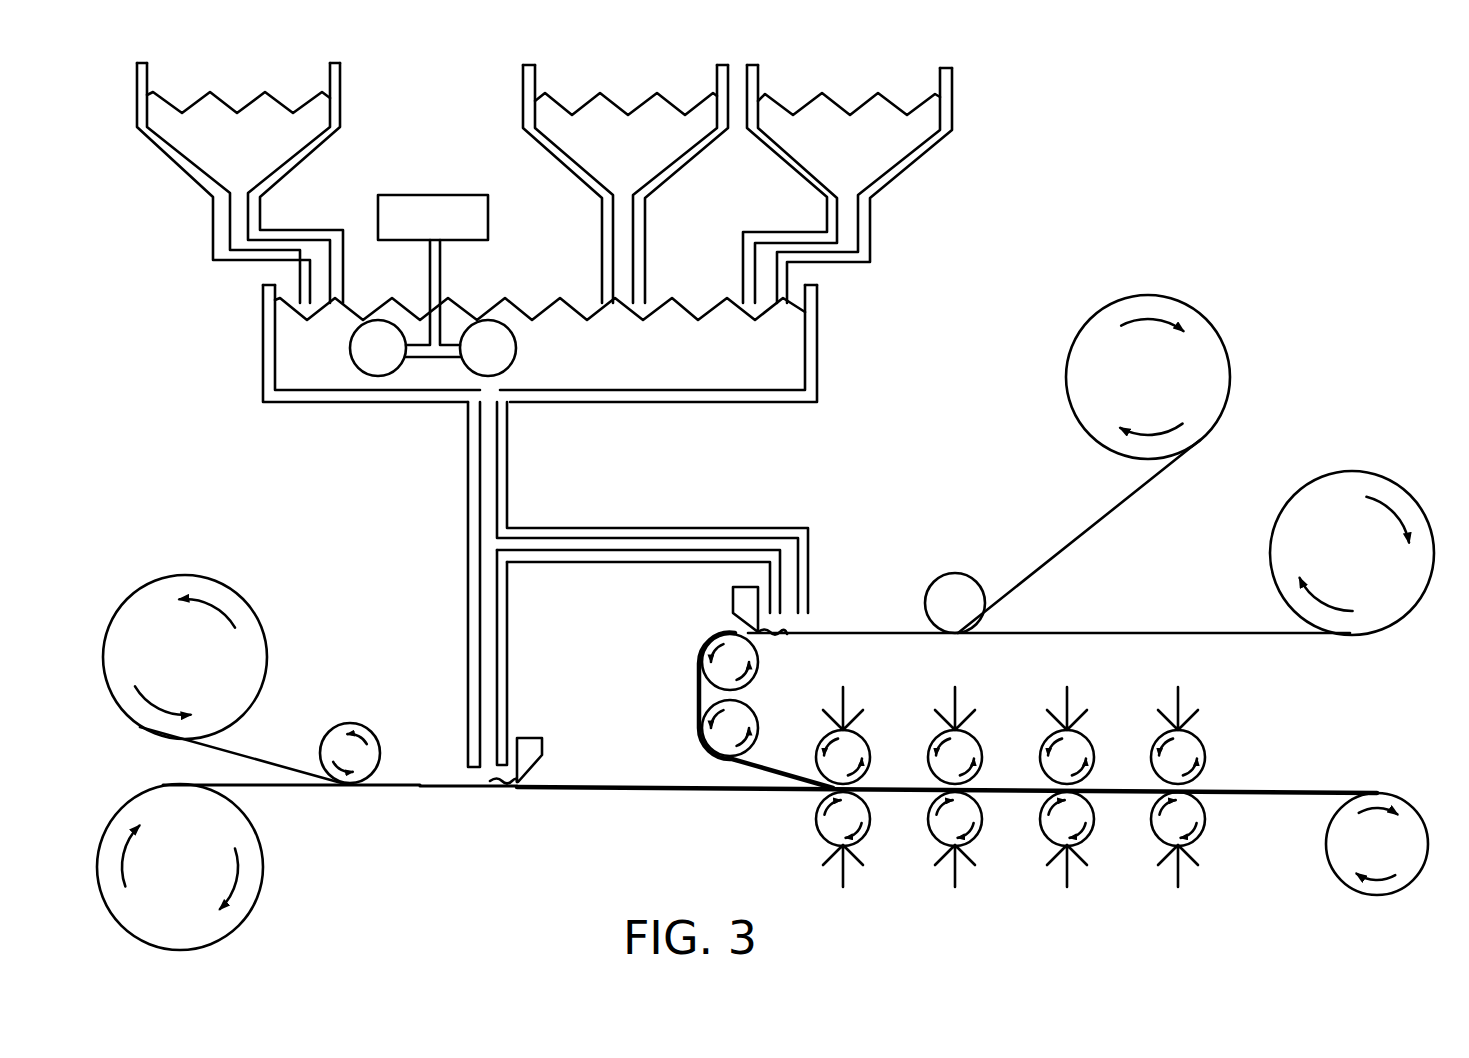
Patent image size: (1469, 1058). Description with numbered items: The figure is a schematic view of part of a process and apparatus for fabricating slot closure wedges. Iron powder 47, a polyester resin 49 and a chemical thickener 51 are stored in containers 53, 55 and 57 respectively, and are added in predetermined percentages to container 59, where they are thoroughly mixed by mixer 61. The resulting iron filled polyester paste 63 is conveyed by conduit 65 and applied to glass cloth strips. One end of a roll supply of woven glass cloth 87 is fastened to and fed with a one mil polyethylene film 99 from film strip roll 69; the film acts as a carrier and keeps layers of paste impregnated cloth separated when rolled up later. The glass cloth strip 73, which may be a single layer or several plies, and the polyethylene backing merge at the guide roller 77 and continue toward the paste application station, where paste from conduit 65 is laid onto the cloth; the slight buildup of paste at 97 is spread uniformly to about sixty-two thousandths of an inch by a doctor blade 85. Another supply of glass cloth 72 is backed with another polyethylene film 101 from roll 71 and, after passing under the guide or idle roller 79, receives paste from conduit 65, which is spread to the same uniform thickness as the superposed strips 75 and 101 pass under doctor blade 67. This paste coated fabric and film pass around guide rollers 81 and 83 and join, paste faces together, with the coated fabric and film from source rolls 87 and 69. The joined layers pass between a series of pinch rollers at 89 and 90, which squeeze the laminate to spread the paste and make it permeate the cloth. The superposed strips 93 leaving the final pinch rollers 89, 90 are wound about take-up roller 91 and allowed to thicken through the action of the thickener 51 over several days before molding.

The iron powder 47 is at (214, 155).
The polyester resin 49 is at (611, 163).
The chemical thickener 51 is at (832, 165).
The container 53 is at (340, 108).
The container 55 is at (523, 103).
The container 57 is at (952, 128).
The container 59 is at (817, 300).
The mixer 61 is at (414, 227).
The iron filled polyester paste 63 is at (612, 363).
The conduit 65 is at (468, 503).
The doctor blade 67 is at (733, 613).
The film strip roll 69 is at (248, 897).
The roll 71 is at (1355, 480).
The glass cloth supply 72 is at (1232, 377).
The glass cloth strip 73 is at (250, 757).
The strip 75 is at (1093, 527).
The guide roller 77 is at (360, 723).
The guide or idle roller 79 is at (955, 573).
The guide roller 81 is at (757, 657).
The guide roller 83 is at (760, 712).
The doctor blade 85 is at (542, 752).
The roll supply of woven glass cloth 87 is at (248, 618).
The pinch rollers 89 is at (870, 743).
The pinch rollers 90 is at (823, 827).
The take-up roller 91 is at (1337, 855).
The superposed strips 93 is at (1248, 790).
The paste buildup 97 is at (487, 790).
The polyethylene film 99 is at (262, 787).
The polyethylene film 101 is at (1140, 632).